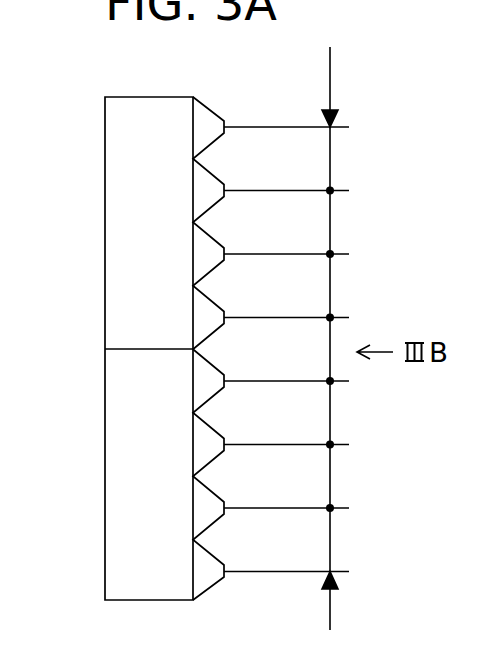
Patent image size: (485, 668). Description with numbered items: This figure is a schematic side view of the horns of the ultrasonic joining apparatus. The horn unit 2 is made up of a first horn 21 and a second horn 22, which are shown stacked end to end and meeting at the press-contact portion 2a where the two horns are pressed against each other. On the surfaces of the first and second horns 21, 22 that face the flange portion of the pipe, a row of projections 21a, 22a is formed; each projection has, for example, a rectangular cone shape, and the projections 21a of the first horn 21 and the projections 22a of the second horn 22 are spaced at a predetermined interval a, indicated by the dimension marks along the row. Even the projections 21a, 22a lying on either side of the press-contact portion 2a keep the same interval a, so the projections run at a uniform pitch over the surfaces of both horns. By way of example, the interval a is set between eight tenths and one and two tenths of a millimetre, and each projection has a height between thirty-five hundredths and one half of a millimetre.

The horn unit 2 is at (121, 348).
The first horn 21 is at (128, 150).
The second horn 22 is at (125, 577).
The projections 21a is at (208, 193).
The projections 22a is at (203, 509).
The press-contact portion 2a is at (148, 349).
The interval a is at (286, 338).